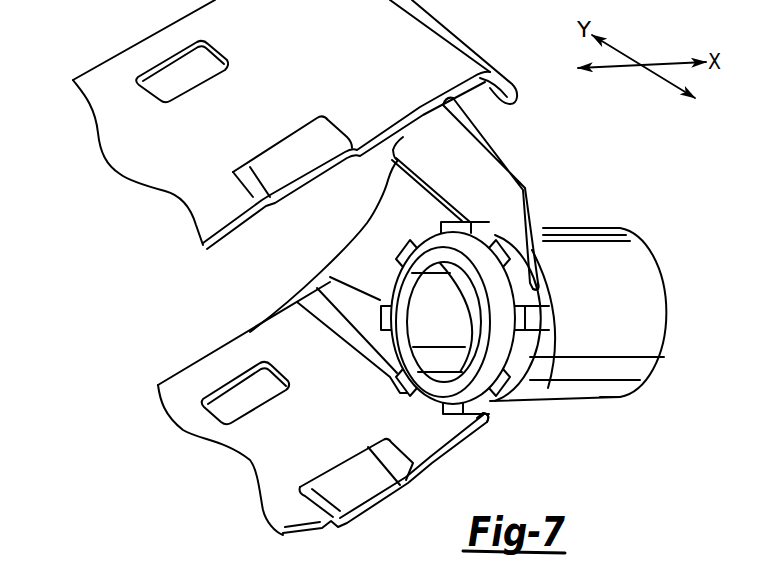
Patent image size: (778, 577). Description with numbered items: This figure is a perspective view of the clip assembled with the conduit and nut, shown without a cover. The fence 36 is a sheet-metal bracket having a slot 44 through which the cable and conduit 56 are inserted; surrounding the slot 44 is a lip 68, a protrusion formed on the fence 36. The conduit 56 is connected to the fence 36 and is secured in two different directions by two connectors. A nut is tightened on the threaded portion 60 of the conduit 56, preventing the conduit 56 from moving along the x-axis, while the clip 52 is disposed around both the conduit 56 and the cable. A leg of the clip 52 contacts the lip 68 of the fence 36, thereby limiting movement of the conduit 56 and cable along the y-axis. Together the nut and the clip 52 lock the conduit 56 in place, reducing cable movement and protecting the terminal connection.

The fence 36 is at (545, 190).
The slot 44 is at (524, 424).
The clip 52 is at (530, 354).
The conduit 56 is at (637, 323).
The threaded portion 60 is at (447, 321).
The lip 68 is at (549, 278).